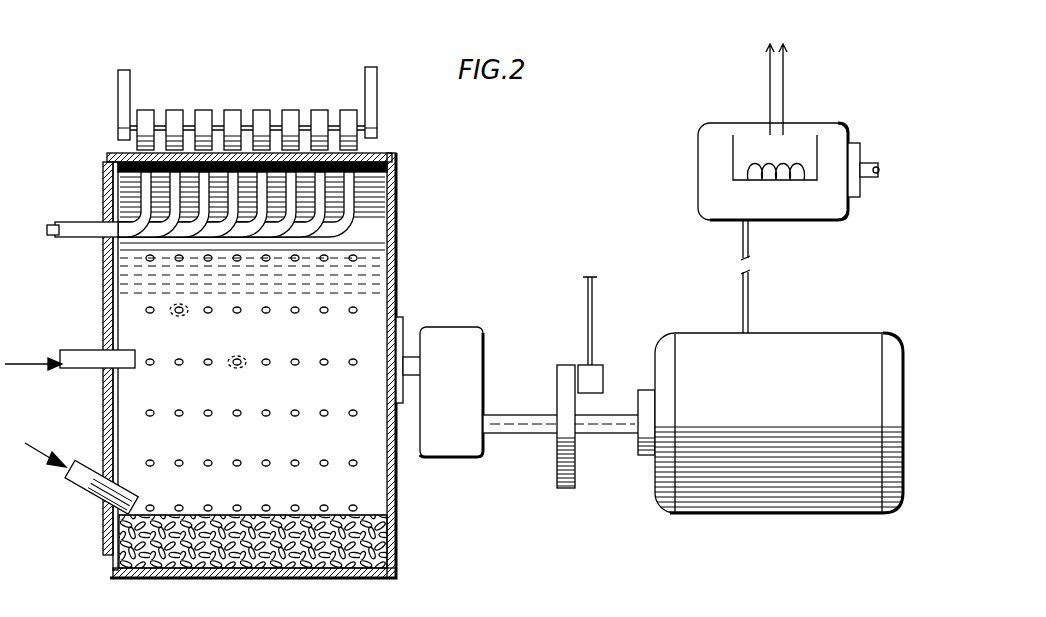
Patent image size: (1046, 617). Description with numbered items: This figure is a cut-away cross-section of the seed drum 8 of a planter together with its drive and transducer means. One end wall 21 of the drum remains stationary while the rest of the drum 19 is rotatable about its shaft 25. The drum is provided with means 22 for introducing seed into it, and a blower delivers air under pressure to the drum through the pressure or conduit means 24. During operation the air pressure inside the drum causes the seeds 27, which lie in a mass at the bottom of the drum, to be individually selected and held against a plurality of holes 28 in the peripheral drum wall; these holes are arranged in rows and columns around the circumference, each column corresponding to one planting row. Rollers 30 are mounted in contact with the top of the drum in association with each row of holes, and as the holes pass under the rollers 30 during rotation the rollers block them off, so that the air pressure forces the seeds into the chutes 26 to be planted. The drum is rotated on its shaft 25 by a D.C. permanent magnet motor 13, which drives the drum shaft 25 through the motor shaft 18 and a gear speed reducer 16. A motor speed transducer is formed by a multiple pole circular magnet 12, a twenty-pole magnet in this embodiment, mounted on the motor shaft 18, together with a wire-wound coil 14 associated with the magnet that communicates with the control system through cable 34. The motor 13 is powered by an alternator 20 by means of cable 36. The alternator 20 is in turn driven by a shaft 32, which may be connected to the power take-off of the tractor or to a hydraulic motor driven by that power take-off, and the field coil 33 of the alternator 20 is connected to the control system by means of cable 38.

The drum 8 is at (397, 576).
The multiple pole circular magnet 12 is at (558, 375).
The D.C. permanent magnet motor 13 is at (677, 513).
The wire-wound coil 14 is at (597, 366).
The gear speed reducer 16 is at (472, 333).
The motor shaft 18 is at (507, 425).
The rotatable drum portion 19 is at (393, 152).
The alternator 20 is at (842, 210).
The stationary end wall 21 is at (103, 548).
The seed introducing means 22 is at (70, 490).
The pressure conduit means 24 is at (70, 350).
The drum shaft 25 is at (410, 360).
The chutes 26 is at (55, 222).
The seeds 27 is at (240, 356).
The holes 28 is at (357, 306).
The rollers 30 is at (170, 110).
The shaft 32 is at (868, 162).
The field coil 33 is at (772, 182).
The cable 34 is at (592, 280).
The cable 36 is at (743, 288).
The cable 38 is at (770, 104).